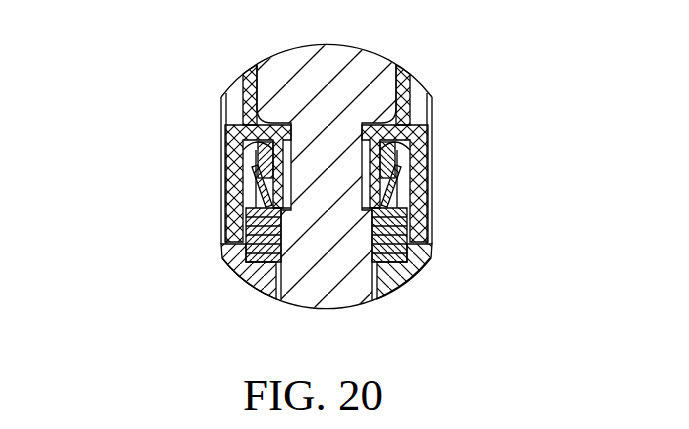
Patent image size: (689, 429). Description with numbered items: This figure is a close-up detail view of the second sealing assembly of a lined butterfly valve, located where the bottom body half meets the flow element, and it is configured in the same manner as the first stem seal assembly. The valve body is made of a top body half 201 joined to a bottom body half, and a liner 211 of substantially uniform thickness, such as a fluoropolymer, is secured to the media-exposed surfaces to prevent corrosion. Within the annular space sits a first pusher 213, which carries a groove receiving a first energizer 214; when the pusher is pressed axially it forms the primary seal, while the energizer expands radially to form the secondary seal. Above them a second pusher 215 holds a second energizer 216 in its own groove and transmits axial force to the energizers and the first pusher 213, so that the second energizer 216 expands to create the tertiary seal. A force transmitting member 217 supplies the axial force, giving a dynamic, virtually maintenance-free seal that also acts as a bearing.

The top body half 201 is at (255, 272).
The liner 211 is at (240, 219).
The first pusher 213 is at (230, 131).
The first energizer 214 is at (390, 162).
The second pusher 215 is at (395, 193).
The second energizer 216 is at (262, 182).
The force transmitting member 217 is at (393, 250).